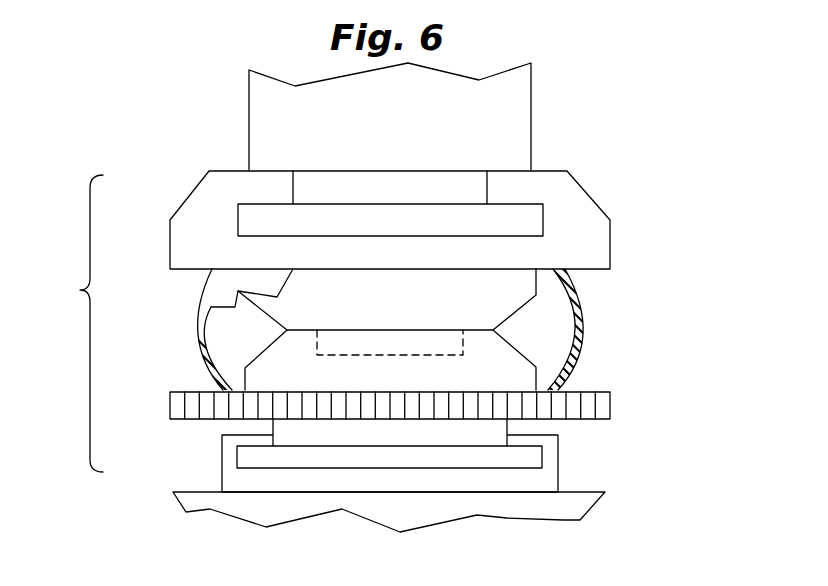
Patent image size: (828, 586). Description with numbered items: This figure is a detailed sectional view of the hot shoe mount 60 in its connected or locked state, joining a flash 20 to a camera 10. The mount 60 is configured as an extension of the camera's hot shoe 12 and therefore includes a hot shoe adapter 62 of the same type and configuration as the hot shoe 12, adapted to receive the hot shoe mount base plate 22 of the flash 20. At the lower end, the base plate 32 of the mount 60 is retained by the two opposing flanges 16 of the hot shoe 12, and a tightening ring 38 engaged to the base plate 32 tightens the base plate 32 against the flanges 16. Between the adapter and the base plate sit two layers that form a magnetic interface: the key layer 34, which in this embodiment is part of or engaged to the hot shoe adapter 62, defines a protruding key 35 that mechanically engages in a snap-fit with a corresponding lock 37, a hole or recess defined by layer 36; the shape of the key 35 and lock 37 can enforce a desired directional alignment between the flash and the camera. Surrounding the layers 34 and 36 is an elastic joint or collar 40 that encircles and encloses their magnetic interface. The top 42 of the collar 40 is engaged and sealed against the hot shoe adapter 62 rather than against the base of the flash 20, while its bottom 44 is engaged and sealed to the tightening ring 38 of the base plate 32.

The camera 10 is at (187, 518).
The hot shoe 12 is at (222, 474).
The flanges 16 is at (240, 438).
The flash 20 is at (211, 99).
The hot shoe mount base plate 22 is at (528, 214).
The base plate 32 is at (535, 456).
The key layer 34 is at (373, 329).
The key 35 is at (390, 342).
The layer 36 is at (390, 378).
The lock 37 is at (463, 347).
The tightening ring 38 is at (610, 403).
The collar 40 is at (583, 322).
The top of the collar 42 is at (570, 275).
The bottom of the collar 44 is at (560, 388).
The hot shoe mount 60 is at (78, 323).
The hot shoe adapter 62 is at (610, 230).